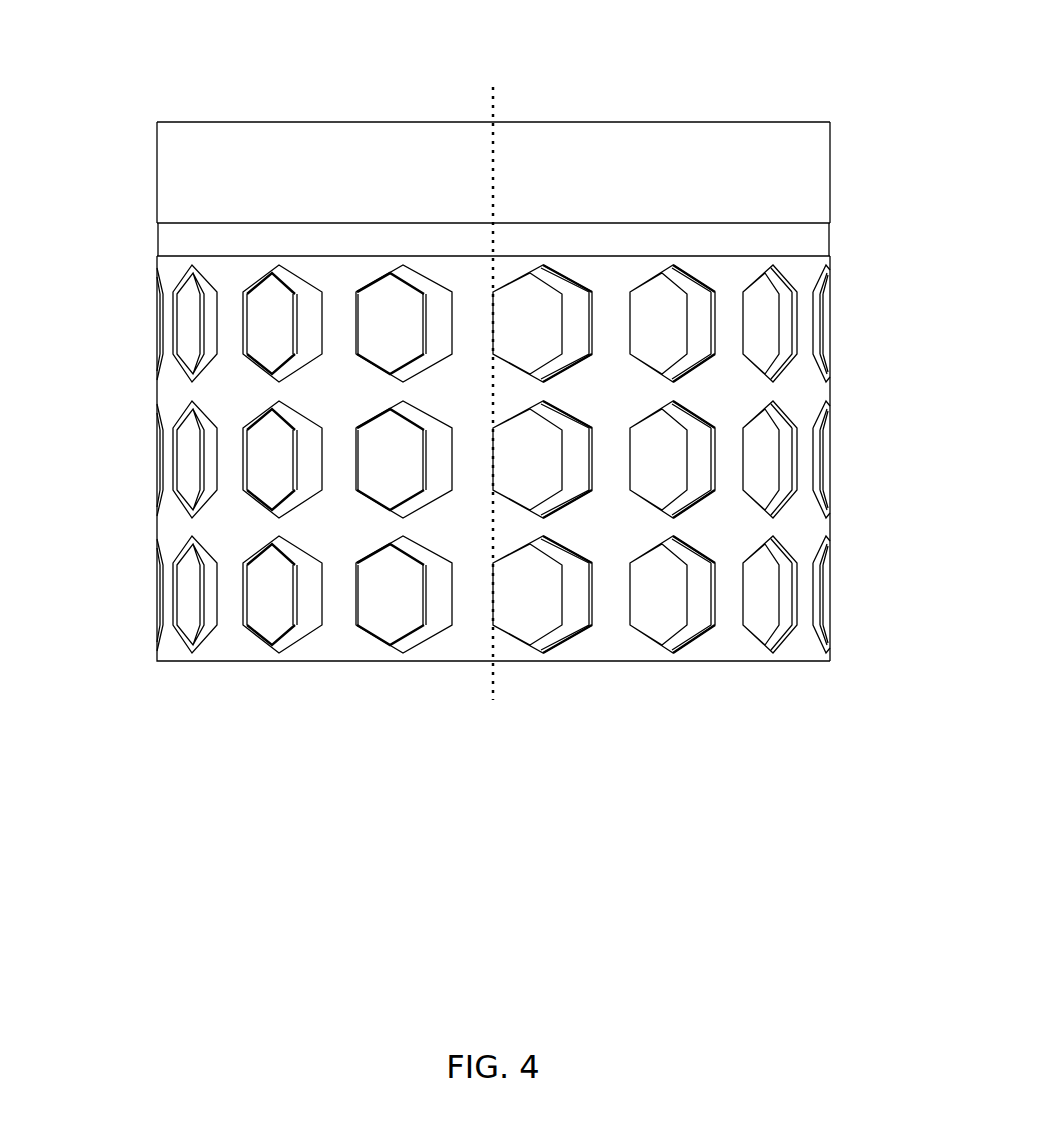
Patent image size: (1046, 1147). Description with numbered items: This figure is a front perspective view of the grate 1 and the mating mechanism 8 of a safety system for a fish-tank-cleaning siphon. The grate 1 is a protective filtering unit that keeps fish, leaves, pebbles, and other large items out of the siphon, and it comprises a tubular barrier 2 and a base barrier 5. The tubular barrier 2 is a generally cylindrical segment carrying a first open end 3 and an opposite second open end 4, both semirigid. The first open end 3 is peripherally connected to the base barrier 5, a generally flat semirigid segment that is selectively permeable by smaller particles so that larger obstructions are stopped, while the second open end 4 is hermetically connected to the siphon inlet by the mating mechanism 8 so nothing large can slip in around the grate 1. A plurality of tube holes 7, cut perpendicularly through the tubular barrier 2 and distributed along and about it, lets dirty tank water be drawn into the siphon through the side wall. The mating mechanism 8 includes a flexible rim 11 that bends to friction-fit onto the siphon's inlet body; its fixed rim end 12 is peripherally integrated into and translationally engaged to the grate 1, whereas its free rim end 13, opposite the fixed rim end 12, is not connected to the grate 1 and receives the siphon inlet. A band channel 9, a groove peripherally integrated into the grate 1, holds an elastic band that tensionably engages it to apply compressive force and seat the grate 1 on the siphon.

The grate 1 is at (218, 720).
The tubular barrier 2 is at (722, 650).
The first open end 3 is at (138, 580).
The second open end 4 is at (140, 337).
The base barrier 5 is at (496, 87).
The plurality of tube holes 7 is at (828, 598).
The mating mechanism 8 is at (293, 67).
The band channel 9 is at (817, 239).
The flexible rim 11 is at (448, 145).
The fixed rim end 12 is at (837, 198).
The free rim end 13 is at (142, 160).